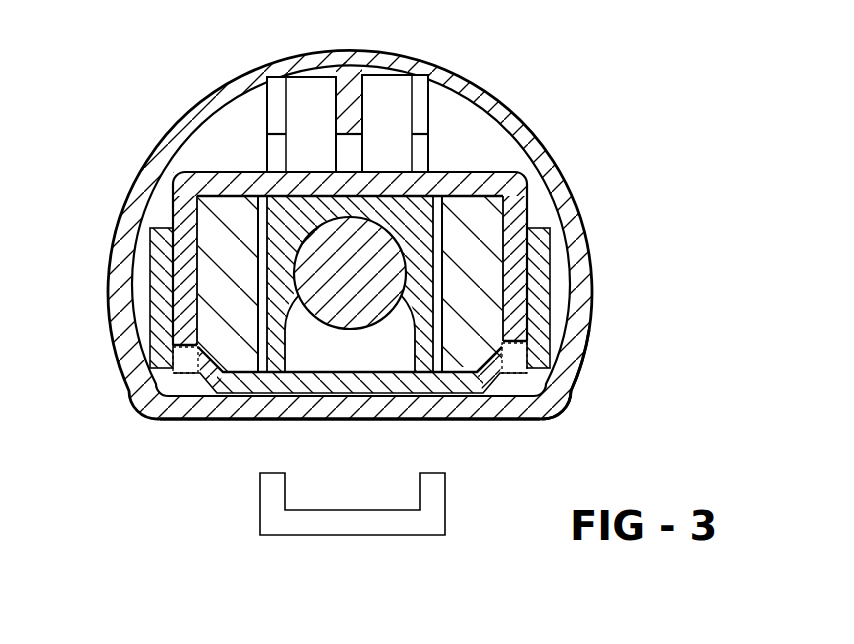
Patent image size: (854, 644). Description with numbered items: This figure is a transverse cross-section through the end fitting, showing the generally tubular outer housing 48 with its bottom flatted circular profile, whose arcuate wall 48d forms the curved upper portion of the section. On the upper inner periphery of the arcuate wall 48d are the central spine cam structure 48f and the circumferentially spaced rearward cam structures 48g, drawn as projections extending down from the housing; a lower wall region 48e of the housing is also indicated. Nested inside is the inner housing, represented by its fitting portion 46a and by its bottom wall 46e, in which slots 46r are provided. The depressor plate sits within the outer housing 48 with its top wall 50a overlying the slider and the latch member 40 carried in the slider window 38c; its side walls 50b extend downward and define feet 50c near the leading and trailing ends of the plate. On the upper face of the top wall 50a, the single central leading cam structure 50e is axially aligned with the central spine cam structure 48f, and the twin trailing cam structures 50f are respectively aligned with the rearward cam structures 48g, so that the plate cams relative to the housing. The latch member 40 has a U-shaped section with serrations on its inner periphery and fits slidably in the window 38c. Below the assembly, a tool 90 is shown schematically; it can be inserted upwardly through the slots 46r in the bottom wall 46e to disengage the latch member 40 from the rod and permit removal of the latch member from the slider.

The outer housing 48 is at (586, 210).
The outer housing arcuate wall 48d is at (584, 362).
The housing bottom wall 48e is at (247, 420).
The central spine cam structure 48f is at (357, 107).
The rearward cam structures 48g is at (430, 118).
The latch member 40 is at (422, 195).
The window 38c is at (254, 254).
The fitting portion 46a is at (157, 300).
The bottom wall 46e is at (373, 390).
The slots 46r is at (435, 388).
The top wall 50a is at (240, 172).
The side walls 50b is at (527, 304).
The feet 50c is at (180, 384).
The central leading cam structure 50e is at (340, 152).
The trailing cam structures 50f is at (430, 147).
The tool 90 is at (357, 523).